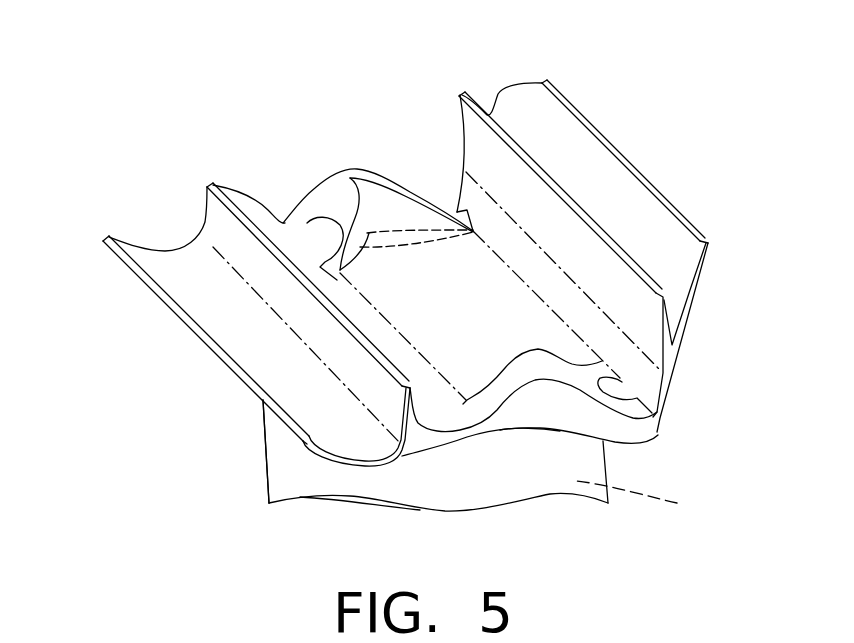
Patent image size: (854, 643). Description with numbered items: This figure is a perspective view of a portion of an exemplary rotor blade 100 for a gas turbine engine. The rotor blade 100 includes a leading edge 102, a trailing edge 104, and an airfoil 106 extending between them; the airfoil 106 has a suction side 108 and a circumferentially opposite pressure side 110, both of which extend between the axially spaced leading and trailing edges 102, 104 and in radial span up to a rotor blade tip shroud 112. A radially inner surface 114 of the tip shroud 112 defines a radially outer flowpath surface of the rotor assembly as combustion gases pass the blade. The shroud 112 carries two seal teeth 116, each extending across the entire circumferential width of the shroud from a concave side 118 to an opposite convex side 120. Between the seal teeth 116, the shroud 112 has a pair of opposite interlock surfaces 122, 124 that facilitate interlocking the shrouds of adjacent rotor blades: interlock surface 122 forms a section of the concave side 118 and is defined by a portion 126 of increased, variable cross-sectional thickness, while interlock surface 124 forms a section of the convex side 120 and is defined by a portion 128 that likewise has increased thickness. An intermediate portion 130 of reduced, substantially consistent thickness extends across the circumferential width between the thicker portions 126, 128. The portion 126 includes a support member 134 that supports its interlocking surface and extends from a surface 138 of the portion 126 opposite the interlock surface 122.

The rotor blade 100 is at (160, 57).
The leading edge 102 is at (263, 454).
The trailing edge 104 is at (608, 463).
The airfoil 106 is at (430, 500).
The suction side 108 is at (323, 478).
The pressure side 110 is at (650, 500).
The rotor blade tip shroud 112 is at (530, 70).
The radially inner surface 114 is at (244, 345).
The seal teeth 116 is at (205, 220).
The concave side 118 is at (424, 177).
The convex side 120 is at (572, 430).
The interlock surface 122 is at (328, 172).
The interlock surface 124 is at (536, 432).
The portion of tip shroud 126 is at (298, 175).
The portion of tip shroud 128 is at (560, 348).
The intermediate portion 130 is at (482, 290).
The support member 134 is at (325, 201).
The surface 138 is at (383, 213).